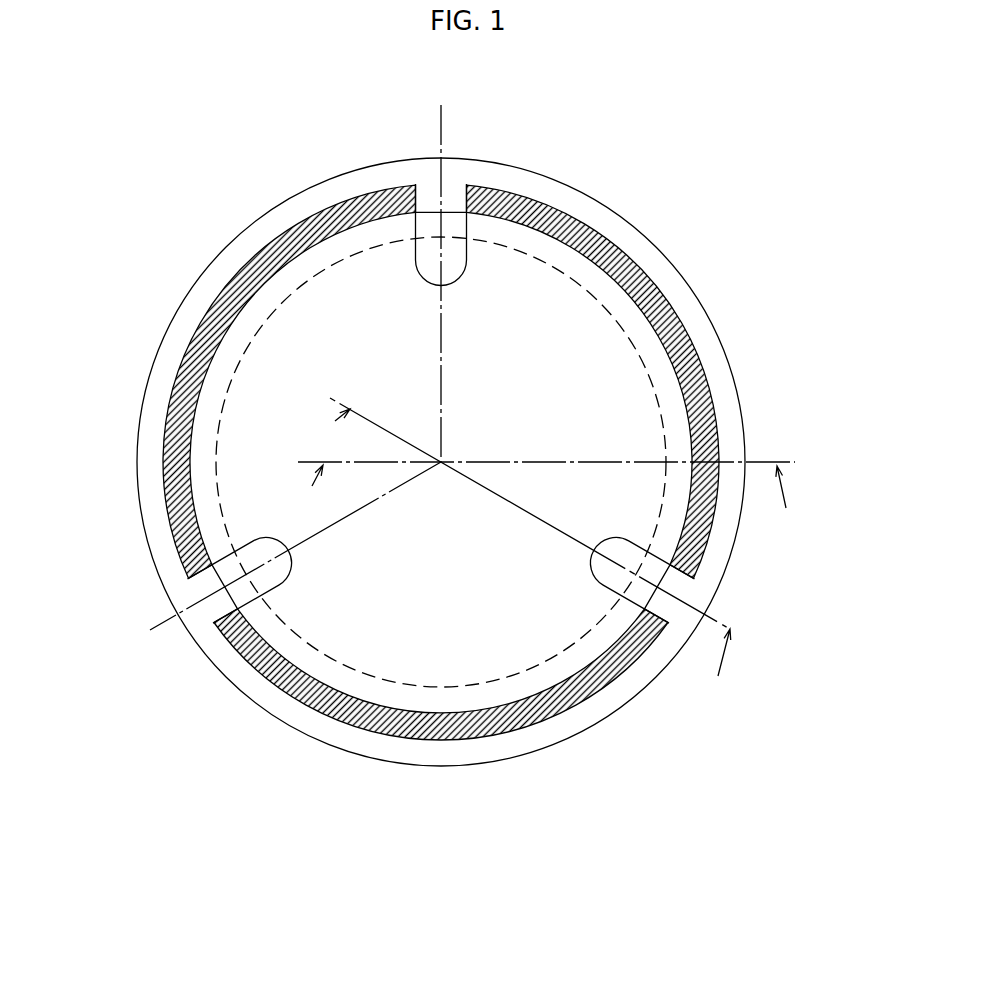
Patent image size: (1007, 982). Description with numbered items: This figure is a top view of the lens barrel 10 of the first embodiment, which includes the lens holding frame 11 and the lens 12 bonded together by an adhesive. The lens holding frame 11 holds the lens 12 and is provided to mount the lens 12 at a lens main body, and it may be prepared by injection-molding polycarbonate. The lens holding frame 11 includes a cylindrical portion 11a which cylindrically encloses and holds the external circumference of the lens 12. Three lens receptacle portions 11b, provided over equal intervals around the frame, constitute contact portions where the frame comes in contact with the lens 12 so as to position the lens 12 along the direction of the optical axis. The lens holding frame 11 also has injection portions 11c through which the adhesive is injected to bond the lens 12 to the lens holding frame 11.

The lens barrel 10 is at (713, 142).
The lens holding frame 11 is at (703, 307).
The cylindrical portion 11a is at (735, 428).
The lens receptacle portions 11b is at (458, 258).
The injection portions 11c is at (208, 312).
The lens 12 is at (700, 382).